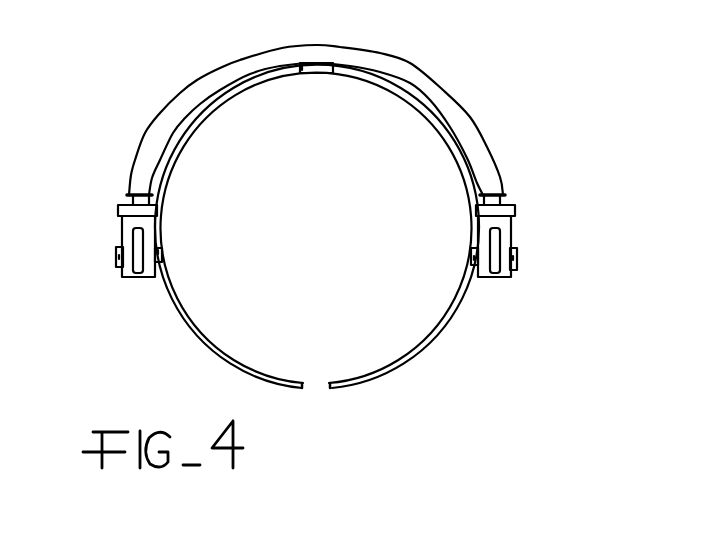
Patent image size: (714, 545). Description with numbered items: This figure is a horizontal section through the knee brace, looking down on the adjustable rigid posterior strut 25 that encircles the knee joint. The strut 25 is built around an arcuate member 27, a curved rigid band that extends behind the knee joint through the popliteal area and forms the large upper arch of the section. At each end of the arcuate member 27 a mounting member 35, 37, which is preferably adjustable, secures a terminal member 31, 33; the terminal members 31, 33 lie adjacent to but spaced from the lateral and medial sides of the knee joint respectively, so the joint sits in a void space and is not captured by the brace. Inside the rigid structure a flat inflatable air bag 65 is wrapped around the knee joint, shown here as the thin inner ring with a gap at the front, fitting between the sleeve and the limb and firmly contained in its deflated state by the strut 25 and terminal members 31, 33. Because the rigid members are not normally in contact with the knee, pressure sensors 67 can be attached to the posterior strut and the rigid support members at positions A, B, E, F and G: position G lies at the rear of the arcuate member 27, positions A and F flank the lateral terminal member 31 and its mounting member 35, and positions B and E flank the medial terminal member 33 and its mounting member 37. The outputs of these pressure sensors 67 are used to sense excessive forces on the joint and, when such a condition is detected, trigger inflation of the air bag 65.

The posterior strut 25 is at (216, 52).
The arcuate member 27 is at (282, 48).
The inflatable air bag 65 is at (427, 105).
The pressure sensors 67 is at (322, 73).
The mounting member 35 is at (120, 205).
The mounting member 37 is at (514, 208).
The terminal member 31 is at (146, 278).
The terminal member 33 is at (490, 282).
The sensor position A is at (162, 252).
The sensor position B is at (471, 258).
The sensor position E is at (518, 258).
The sensor position F is at (117, 265).
The sensor position G is at (300, 72).